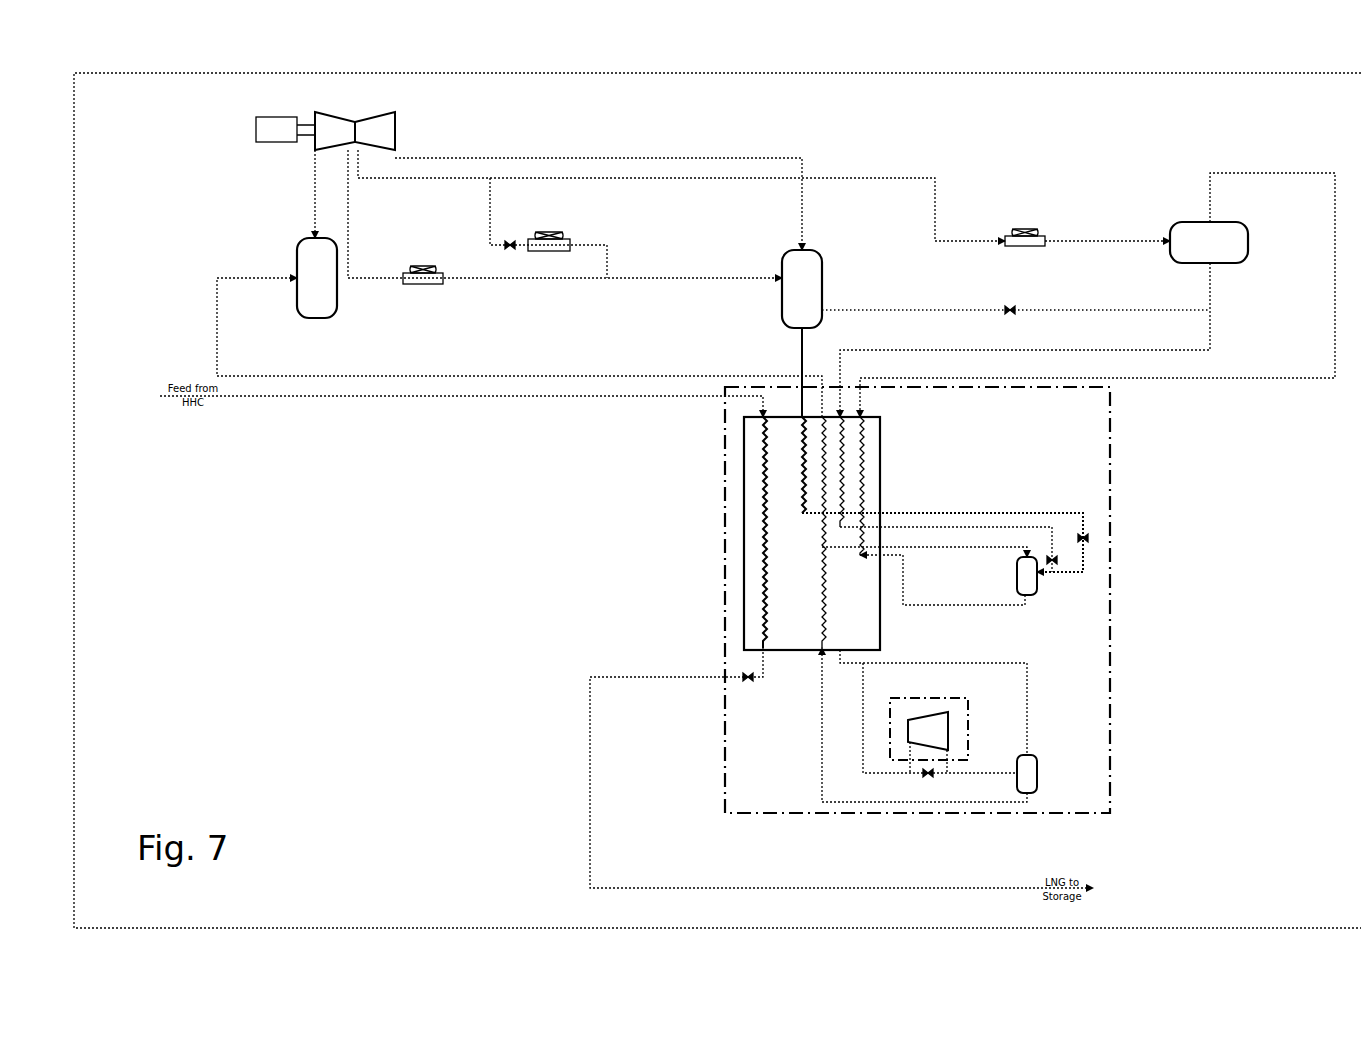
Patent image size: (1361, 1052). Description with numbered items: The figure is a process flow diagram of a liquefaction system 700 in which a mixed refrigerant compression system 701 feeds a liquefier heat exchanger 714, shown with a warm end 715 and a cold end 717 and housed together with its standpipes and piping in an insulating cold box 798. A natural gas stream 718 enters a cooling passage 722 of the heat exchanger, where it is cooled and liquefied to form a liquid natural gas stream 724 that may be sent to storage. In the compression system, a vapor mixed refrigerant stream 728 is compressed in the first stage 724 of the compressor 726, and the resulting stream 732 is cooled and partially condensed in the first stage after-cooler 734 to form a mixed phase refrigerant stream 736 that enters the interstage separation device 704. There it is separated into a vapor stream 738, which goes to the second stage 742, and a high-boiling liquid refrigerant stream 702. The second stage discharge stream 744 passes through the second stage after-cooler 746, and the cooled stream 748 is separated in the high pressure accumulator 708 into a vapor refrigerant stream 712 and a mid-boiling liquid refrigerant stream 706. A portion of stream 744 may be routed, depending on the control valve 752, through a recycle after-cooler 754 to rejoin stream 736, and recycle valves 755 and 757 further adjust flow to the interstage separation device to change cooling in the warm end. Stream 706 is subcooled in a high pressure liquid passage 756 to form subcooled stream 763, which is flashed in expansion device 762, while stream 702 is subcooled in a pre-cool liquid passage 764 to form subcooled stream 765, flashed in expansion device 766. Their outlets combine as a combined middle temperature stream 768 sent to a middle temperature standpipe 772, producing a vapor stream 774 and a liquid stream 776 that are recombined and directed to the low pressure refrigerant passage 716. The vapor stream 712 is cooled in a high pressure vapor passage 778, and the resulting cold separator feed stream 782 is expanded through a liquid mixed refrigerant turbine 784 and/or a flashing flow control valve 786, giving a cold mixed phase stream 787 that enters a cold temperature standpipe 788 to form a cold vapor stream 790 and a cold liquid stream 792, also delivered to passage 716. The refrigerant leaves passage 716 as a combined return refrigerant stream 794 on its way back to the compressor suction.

The system 700 is at (292, 30).
The mixed refrigerant compression system 701 is at (870, 112).
The liquid refrigerant stream 702 is at (800, 350).
The interstage separation device 704 is at (822, 268).
The liquid refrigerant stream 706 is at (1210, 292).
The high pressure accumulator 708 is at (1228, 222).
The vapor refrigerant stream 712 is at (1245, 173).
The liquefier heat exchanger 714 is at (716, 566).
The warm end 715 is at (880, 417).
The low pressure refrigerant passage 716 is at (822, 528).
The cold end 717 is at (880, 650).
The natural gas stream 718 is at (340, 398).
The cooling passage 722 is at (763, 467).
The first stage 724 is at (330, 112).
The compressor 726 is at (295, 158).
The vapor mixed refrigerant stream 728 is at (315, 212).
The stream 732 is at (350, 222).
The first stage after-cooler 734 is at (452, 285).
The mixed phase refrigerant stream 736 is at (560, 280).
The vapor stream 738 is at (802, 210).
The second stage 742 is at (388, 112).
The stream 744 is at (623, 180).
The second stage after-cooler 746 is at (1025, 247).
The stream 748 is at (1110, 241).
The control valve 752 is at (506, 246).
The recycle after-cooler 754 is at (570, 251).
The recycle valve 755 is at (1010, 312).
The high pressure liquid passage 756 is at (880, 440).
The recycle valve 757 is at (522, 338).
The expansion device 762 is at (1057, 560).
The subcooled stream 763 is at (940, 527).
The pre-cool liquid passage 764 is at (800, 437).
The subcooled stream 765 is at (975, 515).
The expansion device 766 is at (1087, 538).
The combined middle temperature stream 768 is at (1042, 585).
The middle temperature standpipe 772 is at (1040, 598).
The middle temperature refrigerant vapor stream 774 is at (990, 548).
The middle temperature liquid stream 776 is at (297, 308).
The high pressure vapor passage 778 is at (880, 455).
The cold separator feed stream 782 is at (863, 683).
The liquid mixed refrigerant turbine 784 is at (948, 725).
The flashing flow control valve 786 is at (930, 778).
The cold mixed phase stream 787 is at (985, 773).
The cold temperature standpipe 788 is at (1037, 772).
The cold temperature refrigerant vapor stream 790 is at (1027, 717).
The cold temperature liquid stream 792 is at (1027, 795).
The combined return refrigerant stream 794 is at (635, 376).
The cold box 798 is at (1115, 716).